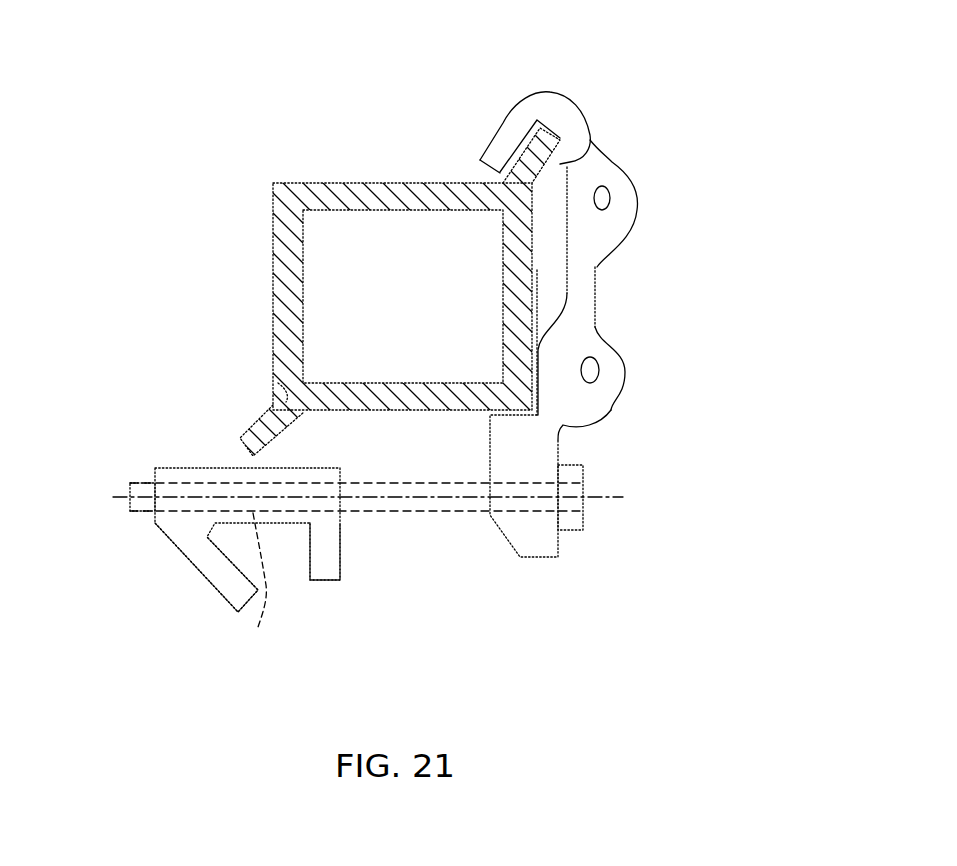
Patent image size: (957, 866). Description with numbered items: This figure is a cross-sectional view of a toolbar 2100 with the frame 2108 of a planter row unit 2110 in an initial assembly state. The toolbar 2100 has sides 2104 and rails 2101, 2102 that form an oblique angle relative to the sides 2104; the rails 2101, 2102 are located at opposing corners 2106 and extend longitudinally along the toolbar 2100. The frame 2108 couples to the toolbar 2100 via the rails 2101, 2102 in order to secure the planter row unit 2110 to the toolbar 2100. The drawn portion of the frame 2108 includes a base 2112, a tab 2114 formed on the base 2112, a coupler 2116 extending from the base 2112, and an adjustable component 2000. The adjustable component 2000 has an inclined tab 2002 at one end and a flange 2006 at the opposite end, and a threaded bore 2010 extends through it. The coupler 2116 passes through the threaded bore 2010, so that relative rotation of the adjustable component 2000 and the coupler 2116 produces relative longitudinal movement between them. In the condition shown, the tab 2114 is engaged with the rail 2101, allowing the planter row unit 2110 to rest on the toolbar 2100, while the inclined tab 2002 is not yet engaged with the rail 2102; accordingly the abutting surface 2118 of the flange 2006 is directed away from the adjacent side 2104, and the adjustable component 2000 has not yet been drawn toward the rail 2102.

The toolbar 2100 is at (328, 270).
The sides 2104 is at (375, 183).
The opposing corners 2106 is at (513, 207).
The rail 2102 is at (248, 425).
The tab 2114 is at (562, 93).
The planter row unit 2110 is at (664, 278).
The rail 2101 is at (598, 150).
The frame 2108 is at (595, 287).
The base 2112 is at (764, 280).
The abutting surface 2118 is at (320, 583).
The coupler 2116 is at (415, 507).
The adjustable component 2000 is at (224, 561).
The inclined tab 2002 is at (173, 553).
The flange 2006 is at (342, 543).
The bore 2010 is at (246, 584).